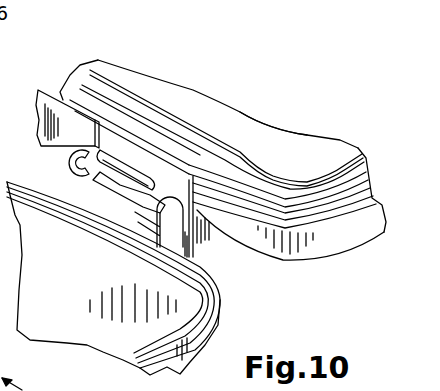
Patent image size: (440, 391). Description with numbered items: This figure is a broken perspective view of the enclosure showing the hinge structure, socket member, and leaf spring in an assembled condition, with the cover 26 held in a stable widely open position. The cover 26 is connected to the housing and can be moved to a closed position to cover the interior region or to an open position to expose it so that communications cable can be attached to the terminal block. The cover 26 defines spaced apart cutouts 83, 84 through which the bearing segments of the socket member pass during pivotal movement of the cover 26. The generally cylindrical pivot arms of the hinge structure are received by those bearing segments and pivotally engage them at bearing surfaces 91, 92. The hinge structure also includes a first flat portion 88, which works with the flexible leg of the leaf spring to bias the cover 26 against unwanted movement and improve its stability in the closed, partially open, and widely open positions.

The cover 26 is at (290, 152).
The cutout 83 is at (126, 168).
The cutout 84 is at (258, 138).
The first flat portion 88 is at (70, 160).
The bearing surface 91 is at (127, 180).
The bearing surface 92 is at (157, 190).